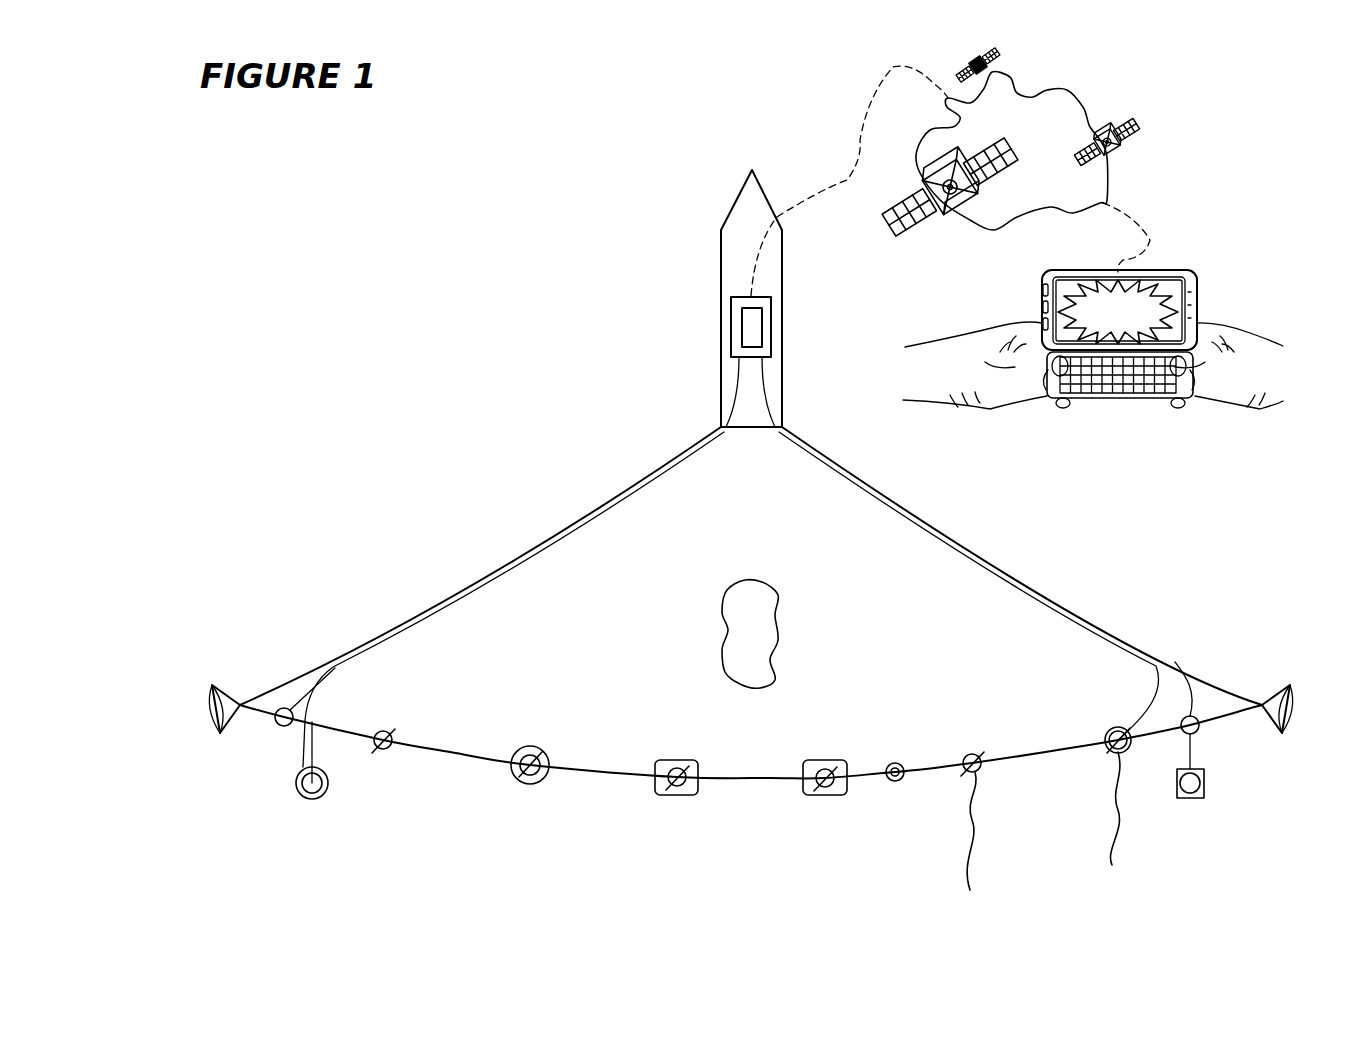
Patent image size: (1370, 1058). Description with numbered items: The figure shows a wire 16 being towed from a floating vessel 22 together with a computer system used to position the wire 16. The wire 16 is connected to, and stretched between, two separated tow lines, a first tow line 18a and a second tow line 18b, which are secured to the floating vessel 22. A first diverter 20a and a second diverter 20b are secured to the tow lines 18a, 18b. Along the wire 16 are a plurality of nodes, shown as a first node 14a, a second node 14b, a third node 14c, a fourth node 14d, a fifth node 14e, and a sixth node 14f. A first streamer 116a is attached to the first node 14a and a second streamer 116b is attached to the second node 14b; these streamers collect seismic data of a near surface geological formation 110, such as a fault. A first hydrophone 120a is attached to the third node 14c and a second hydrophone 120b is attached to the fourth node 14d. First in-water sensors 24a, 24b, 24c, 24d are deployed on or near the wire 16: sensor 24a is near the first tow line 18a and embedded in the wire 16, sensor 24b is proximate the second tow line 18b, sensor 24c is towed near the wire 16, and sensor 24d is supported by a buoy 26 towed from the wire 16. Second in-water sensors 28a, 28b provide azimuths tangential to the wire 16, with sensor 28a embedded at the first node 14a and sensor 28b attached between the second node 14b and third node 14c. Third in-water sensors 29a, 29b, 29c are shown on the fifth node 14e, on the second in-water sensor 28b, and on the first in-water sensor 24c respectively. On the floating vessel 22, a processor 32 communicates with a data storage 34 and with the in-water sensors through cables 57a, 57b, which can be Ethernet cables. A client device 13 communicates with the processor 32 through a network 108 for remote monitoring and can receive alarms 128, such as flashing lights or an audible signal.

The client device 13 is at (1192, 273).
The first node 14a is at (1118, 728).
The second node 14b is at (965, 757).
The third node 14c is at (811, 763).
The fourth node 14d is at (661, 763).
The fifth node 14e is at (513, 752).
The sixth node 14f is at (390, 750).
The wire 16 is at (1020, 752).
The first tow line 18a is at (980, 561).
The second tow line 18b is at (525, 563).
The first diverter 20a is at (1295, 710).
The second diverter 20b is at (207, 710).
The floating vessel 22 is at (734, 200).
The first in-water sensor 24a is at (1184, 733).
The first in-water sensor 24b is at (278, 726).
The first in-water sensor 24c is at (299, 791).
The first in-water sensor 24d is at (1200, 789).
The buoy 26 is at (1205, 775).
The second in-water sensor 28a is at (1105, 736).
The second in-water sensor 28b is at (888, 765).
The third in-water sensor 29a is at (545, 781).
The third in-water sensor 29b is at (902, 779).
The third in-water sensor 29c is at (325, 795).
The processor 32 is at (731, 328).
The data storage 34 is at (771, 328).
The cable 57a is at (866, 497).
The cable 57b is at (638, 498).
The network 108 is at (1072, 90).
The near surface geological formation 110 is at (728, 592).
The first streamer 116a is at (1110, 820).
The second streamer 116b is at (982, 806).
The first hydrophone 120a is at (845, 793).
The second hydrophone 120b is at (695, 793).
The alarm 128 is at (1083, 290).